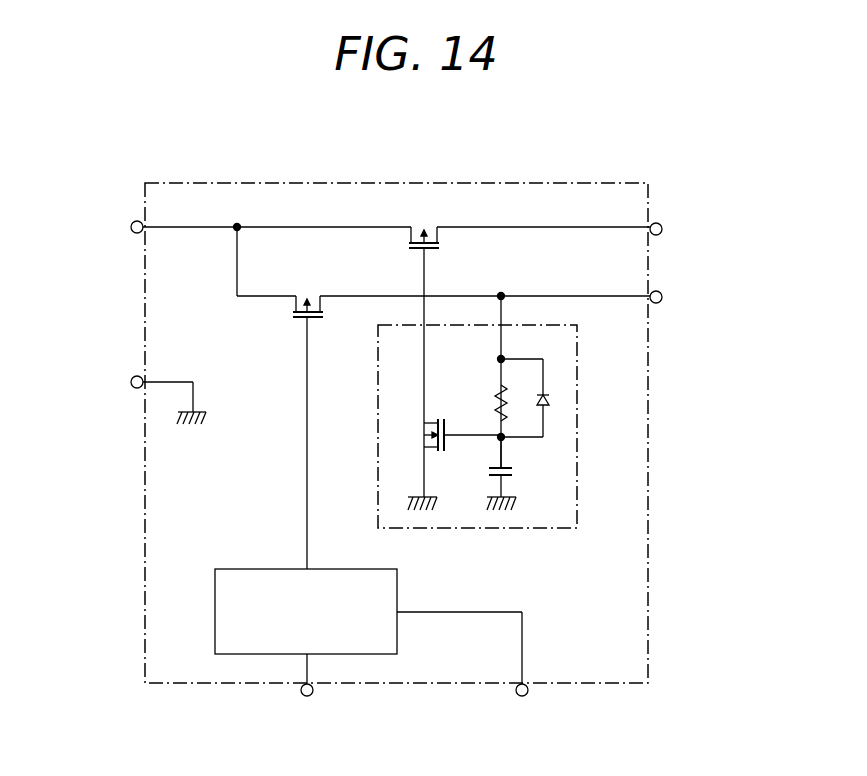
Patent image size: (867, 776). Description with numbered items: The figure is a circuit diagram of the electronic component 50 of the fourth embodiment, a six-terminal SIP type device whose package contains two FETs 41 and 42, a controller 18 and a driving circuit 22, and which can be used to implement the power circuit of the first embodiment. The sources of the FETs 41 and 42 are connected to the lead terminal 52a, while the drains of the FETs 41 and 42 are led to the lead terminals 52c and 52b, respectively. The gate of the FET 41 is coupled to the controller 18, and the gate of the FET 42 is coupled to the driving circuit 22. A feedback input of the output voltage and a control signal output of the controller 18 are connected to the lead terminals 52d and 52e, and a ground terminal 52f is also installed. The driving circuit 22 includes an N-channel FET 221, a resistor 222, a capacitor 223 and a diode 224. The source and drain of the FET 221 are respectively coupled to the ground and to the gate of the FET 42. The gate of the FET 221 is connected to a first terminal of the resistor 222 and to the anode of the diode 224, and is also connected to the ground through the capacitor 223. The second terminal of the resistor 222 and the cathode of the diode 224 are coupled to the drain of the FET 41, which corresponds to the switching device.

The electronic component 50 is at (361, 152).
The lead terminal 52a is at (132, 221).
The lead terminal 52b is at (662, 224).
The lead terminal 52c is at (662, 292).
The lead terminal 52d is at (525, 697).
The lead terminal 52e is at (310, 697).
The ground terminal 52f is at (132, 376).
The FET 41 is at (297, 303).
The FET 42 is at (440, 232).
The driving circuit 22 is at (376, 406).
The N-channel FET 221 is at (432, 451).
The resistor 222 is at (499, 394).
The capacitor 223 is at (490, 472).
The diode 224 is at (546, 410).
The controller 18 is at (256, 568).